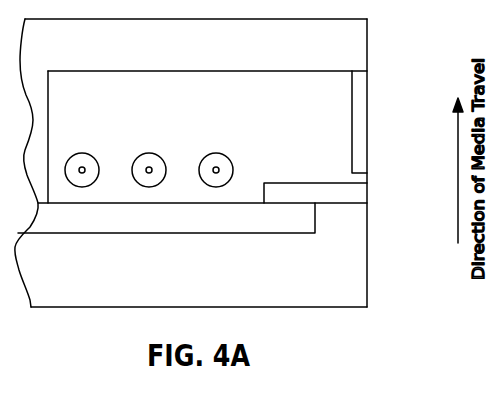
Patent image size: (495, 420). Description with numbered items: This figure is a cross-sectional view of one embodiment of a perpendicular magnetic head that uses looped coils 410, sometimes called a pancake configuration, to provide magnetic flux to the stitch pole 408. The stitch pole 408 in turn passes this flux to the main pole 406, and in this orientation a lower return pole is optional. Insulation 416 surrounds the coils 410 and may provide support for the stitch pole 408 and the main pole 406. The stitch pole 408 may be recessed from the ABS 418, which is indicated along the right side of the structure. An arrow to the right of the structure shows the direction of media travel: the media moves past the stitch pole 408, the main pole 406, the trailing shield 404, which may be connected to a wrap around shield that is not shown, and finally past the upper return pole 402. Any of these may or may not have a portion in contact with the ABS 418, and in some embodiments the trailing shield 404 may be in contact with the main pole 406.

The upper return pole 402 is at (276, 53).
The trailing shield 404 is at (368, 103).
The main pole 406 is at (368, 190).
The stitch pole 408 is at (224, 229).
The looped coils 410 is at (74, 154).
The insulation 416 is at (314, 145).
The ABS 418 is at (374, 35).